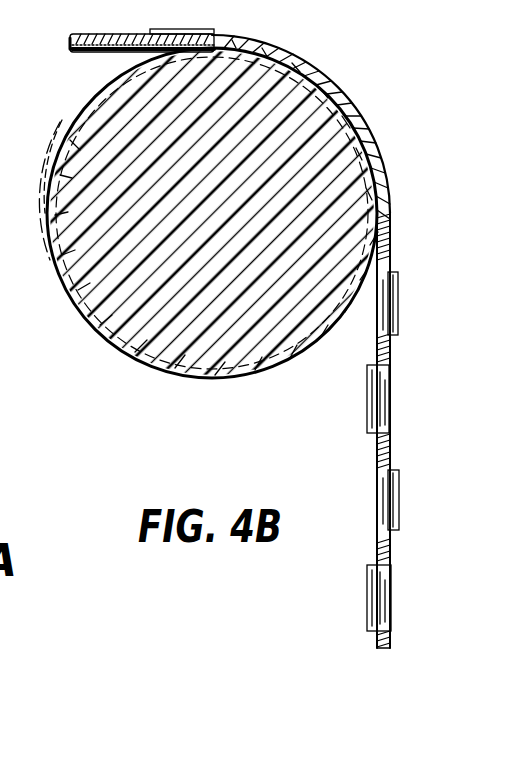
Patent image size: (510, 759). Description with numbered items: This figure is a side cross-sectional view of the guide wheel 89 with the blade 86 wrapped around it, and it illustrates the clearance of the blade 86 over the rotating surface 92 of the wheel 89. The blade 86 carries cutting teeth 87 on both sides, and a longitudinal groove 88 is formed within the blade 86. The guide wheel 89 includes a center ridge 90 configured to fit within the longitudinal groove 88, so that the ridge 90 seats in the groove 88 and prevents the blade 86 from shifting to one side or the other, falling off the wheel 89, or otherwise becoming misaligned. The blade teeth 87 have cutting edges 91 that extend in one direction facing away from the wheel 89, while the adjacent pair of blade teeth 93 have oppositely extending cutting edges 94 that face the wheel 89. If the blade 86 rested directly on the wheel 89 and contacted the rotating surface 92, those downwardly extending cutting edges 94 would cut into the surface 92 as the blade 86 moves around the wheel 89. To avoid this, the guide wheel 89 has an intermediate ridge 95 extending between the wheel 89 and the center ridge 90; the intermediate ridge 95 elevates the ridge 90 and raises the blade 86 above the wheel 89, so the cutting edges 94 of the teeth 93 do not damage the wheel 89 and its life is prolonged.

The blade 86 is at (420, 352).
The cutting teeth 87 is at (400, 298).
The longitudinal groove 88 is at (112, 52).
The guide wheel 89 is at (212, 213).
The center ridge 90 is at (297, 65).
The cutting edges 91 is at (399, 318).
The rotating surface 92 is at (366, 122).
The blade teeth 93 is at (60, 52).
The cutting edges 94 is at (82, 56).
The intermediate ridge 95 is at (348, 74).